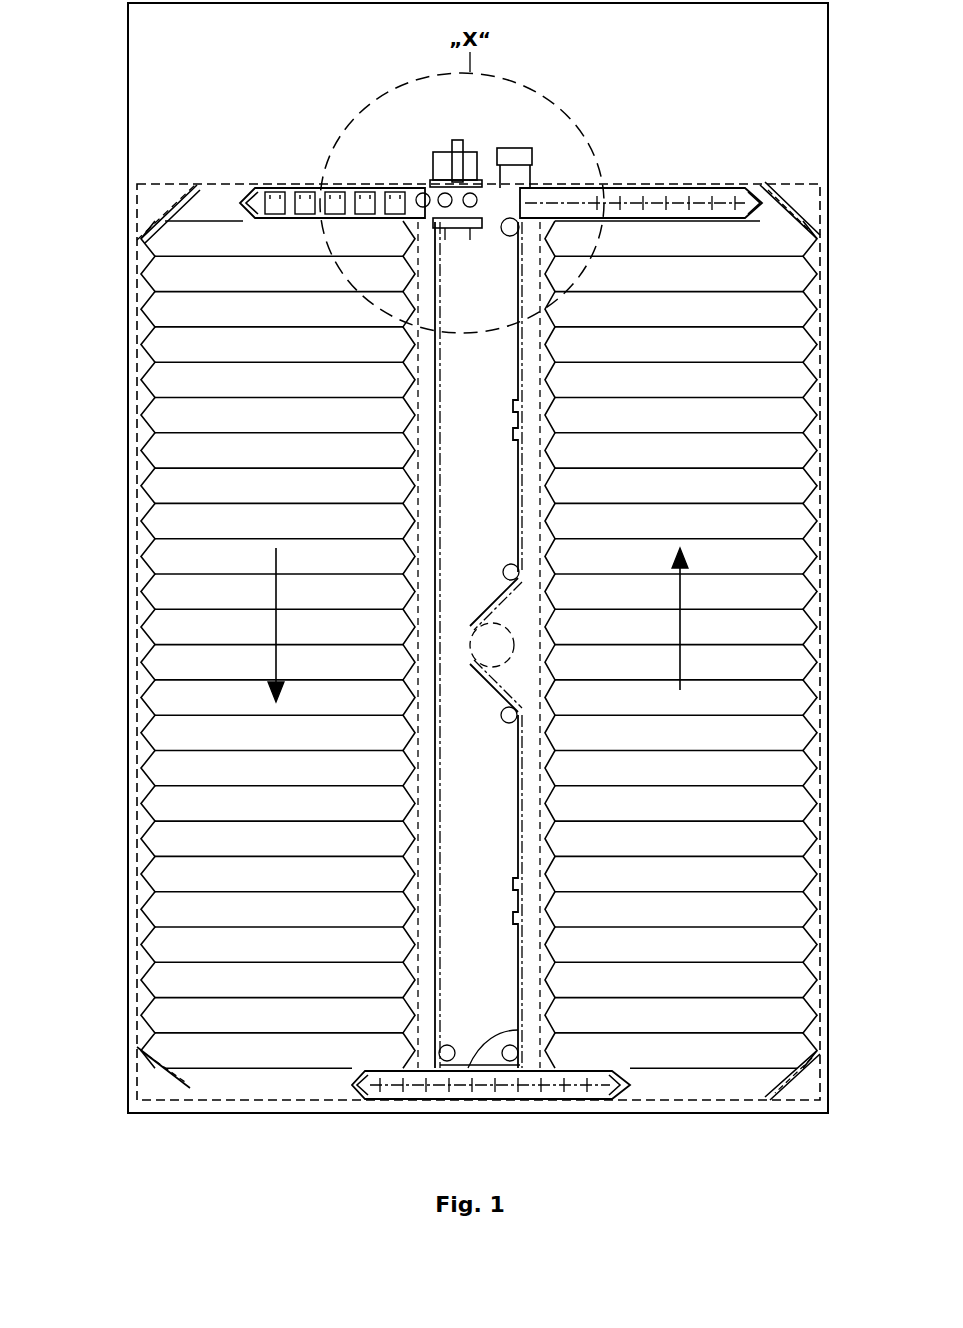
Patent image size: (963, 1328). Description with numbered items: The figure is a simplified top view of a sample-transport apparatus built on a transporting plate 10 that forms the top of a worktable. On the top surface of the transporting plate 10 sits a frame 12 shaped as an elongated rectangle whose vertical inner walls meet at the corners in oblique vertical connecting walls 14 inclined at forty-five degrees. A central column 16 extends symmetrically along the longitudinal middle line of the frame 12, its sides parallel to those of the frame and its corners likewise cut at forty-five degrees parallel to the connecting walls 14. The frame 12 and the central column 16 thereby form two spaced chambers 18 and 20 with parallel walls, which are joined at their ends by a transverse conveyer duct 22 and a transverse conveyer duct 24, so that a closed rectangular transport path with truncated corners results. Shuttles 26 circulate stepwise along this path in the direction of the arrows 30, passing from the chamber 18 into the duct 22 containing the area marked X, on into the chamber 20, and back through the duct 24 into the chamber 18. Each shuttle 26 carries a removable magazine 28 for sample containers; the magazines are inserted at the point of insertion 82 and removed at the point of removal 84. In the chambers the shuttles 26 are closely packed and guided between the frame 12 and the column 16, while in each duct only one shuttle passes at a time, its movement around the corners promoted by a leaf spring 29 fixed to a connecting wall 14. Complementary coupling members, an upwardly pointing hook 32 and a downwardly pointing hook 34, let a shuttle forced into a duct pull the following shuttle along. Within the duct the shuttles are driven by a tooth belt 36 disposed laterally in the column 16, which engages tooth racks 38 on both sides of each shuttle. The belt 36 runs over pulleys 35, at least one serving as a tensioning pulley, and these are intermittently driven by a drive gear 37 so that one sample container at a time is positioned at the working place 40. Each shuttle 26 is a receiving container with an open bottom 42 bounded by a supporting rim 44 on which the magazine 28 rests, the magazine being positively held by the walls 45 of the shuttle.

The transporting plate 10 is at (728, 50).
The frame 12 is at (820, 277).
The oblique vertical connecting walls 14 is at (793, 203).
The central column 16 is at (489, 397).
The chamber 18 is at (793, 490).
The chamber 20 is at (163, 488).
The transverse conveyer duct 22 is at (203, 205).
The transverse conveyer duct 24 is at (644, 1092).
The shuttle 26 is at (790, 600).
The magazine 28 is at (245, 190).
The leaf spring 29 is at (806, 215).
The arrows 30 is at (272, 632).
The upwardly pointing hook 32 is at (230, 200).
The downwardly pointing hook 34 is at (506, 190).
The pulleys 35 is at (507, 236).
The tooth belt 36 is at (518, 476).
The drive gear 37 is at (492, 640).
The tooth racks 38 is at (487, 1068).
The working place 40 is at (488, 188).
The open bottom 42 is at (631, 190).
The supporting rim 44 is at (297, 190).
The walls 45 is at (748, 190).
The point of insertion 82 is at (834, 953).
The point of removal 84 is at (124, 1038).